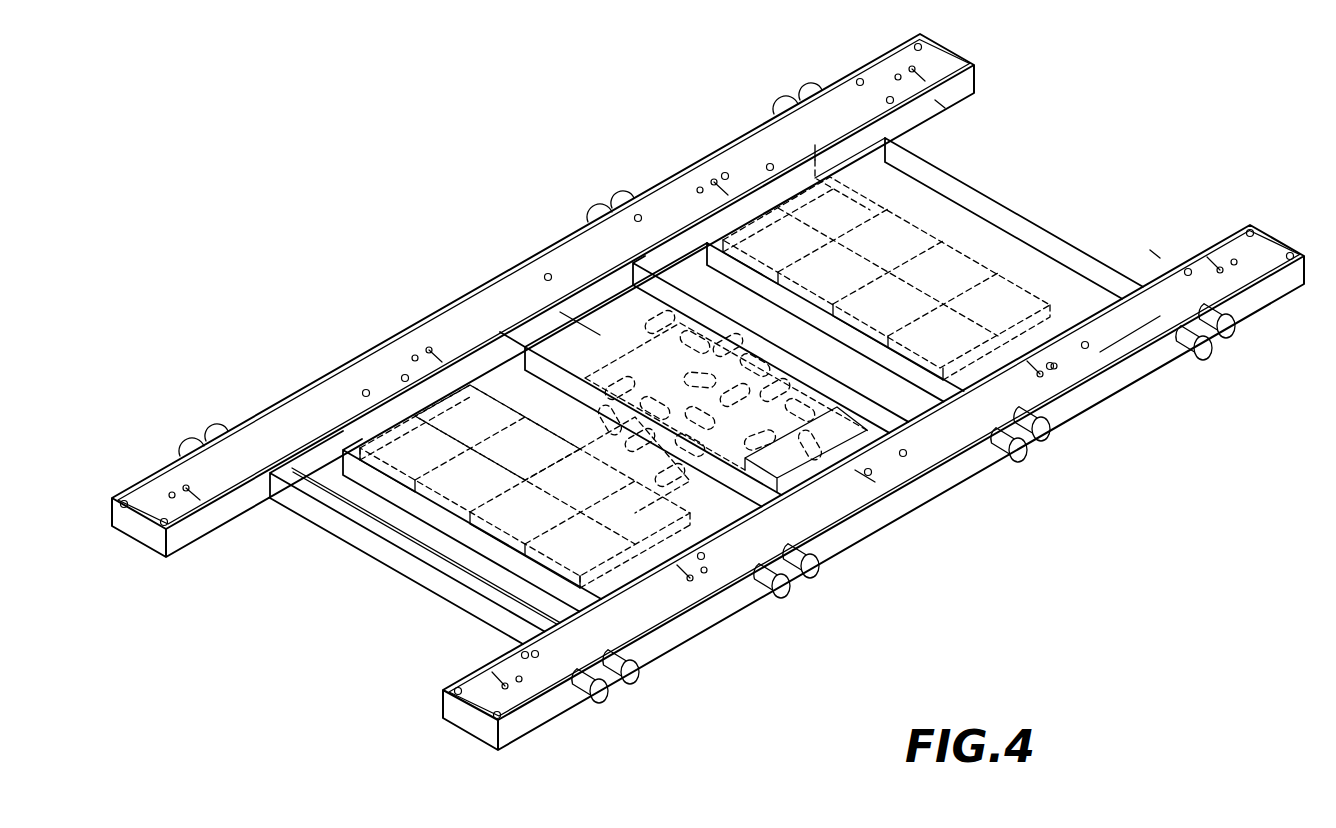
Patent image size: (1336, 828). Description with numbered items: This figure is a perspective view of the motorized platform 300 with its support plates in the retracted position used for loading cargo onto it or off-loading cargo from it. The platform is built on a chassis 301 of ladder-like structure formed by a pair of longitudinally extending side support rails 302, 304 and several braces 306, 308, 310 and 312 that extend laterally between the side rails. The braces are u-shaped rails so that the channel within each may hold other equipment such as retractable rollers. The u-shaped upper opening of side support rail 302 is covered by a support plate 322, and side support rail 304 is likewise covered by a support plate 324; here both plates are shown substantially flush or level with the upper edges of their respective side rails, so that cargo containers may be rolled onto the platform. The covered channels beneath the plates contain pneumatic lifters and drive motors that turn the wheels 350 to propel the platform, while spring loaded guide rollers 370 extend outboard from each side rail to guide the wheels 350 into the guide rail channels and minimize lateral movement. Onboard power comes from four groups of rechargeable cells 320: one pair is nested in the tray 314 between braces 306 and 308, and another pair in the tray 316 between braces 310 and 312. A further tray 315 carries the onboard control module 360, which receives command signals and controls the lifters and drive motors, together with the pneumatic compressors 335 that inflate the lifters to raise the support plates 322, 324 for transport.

The motorized platform 300 is at (1133, 640).
The chassis 301 is at (935, 100).
The side support rail 302 is at (925, 40).
The side support rail 304 is at (1262, 244).
The brace 306 is at (1002, 216).
The brace 308 is at (897, 393).
The brace 310 is at (500, 368).
The brace 312 is at (395, 566).
The tray 314 is at (380, 430).
The tray 315 is at (600, 315).
The tray 316 is at (790, 152).
The cells 320 is at (712, 378).
The support plate 322 is at (560, 312).
The support plate 324 is at (1128, 340).
The pneumatic compressors 335 is at (640, 365).
The wheels 350 is at (1213, 358).
The control module 360 is at (862, 476).
The spring loaded guide rollers 370 is at (1238, 330).